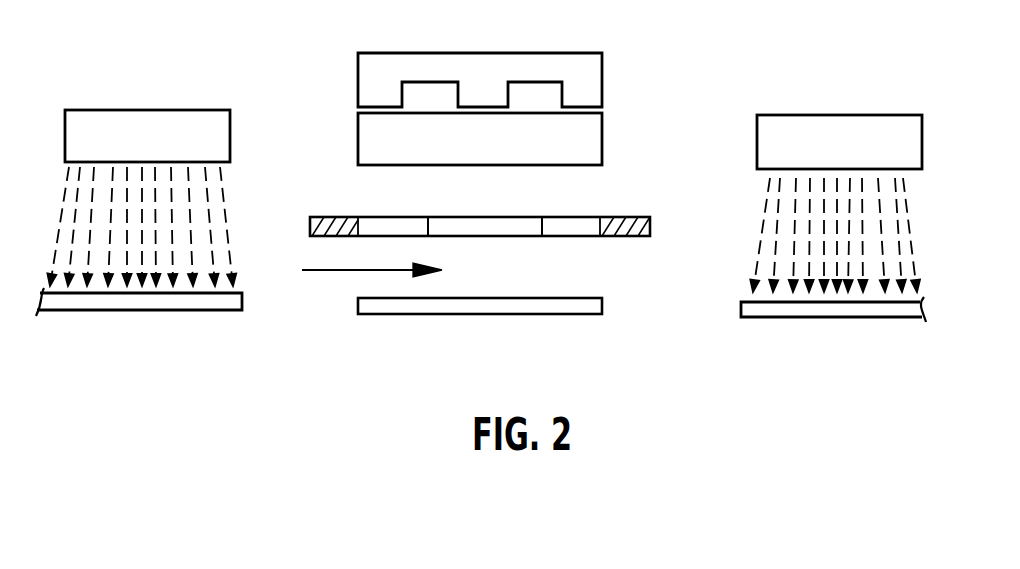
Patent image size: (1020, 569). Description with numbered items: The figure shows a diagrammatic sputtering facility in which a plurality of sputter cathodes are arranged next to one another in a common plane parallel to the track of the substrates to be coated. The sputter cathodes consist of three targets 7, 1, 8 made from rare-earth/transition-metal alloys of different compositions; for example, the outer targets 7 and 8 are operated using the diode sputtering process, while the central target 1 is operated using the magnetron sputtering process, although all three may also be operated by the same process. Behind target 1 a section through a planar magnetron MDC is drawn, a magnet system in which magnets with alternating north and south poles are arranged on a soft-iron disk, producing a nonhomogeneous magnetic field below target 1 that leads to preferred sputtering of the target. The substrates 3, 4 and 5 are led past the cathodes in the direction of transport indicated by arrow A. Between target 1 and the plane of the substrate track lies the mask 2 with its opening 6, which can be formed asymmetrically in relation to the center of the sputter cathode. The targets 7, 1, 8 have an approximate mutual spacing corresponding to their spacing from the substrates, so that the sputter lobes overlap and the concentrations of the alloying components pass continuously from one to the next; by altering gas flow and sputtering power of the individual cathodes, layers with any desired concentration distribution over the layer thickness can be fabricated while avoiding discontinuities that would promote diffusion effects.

The target 1 is at (585, 142).
The mask 2 is at (642, 225).
The substrate 3 is at (172, 305).
The substrate 4 is at (553, 305).
The substrate 5 is at (855, 313).
The opening 6 is at (512, 227).
The target 7 is at (133, 133).
The target 8 is at (852, 135).
The planar magnetron MDC is at (545, 53).
The direction of transport A is at (372, 258).